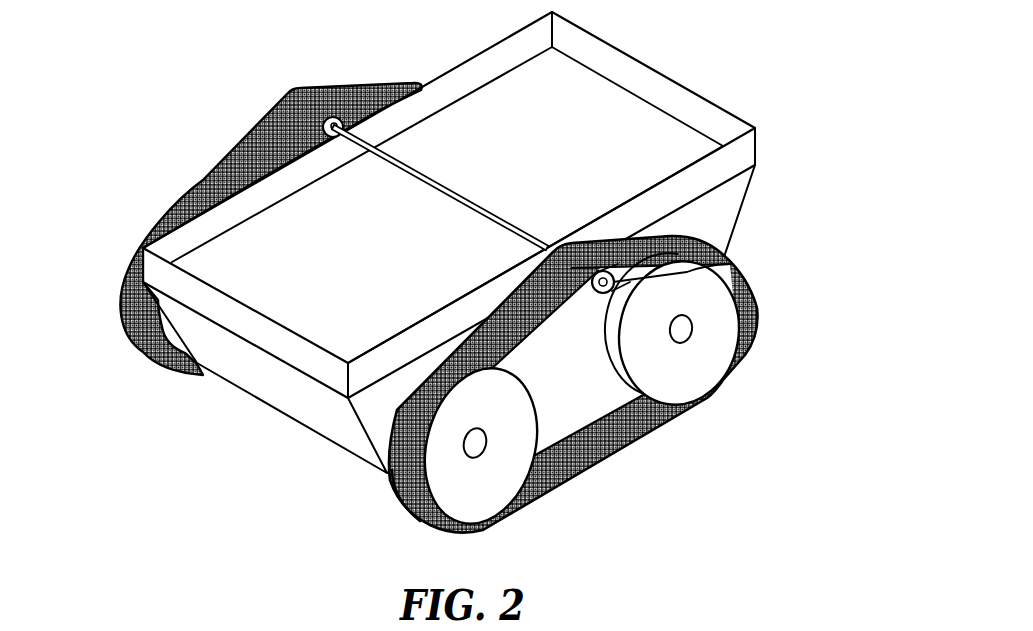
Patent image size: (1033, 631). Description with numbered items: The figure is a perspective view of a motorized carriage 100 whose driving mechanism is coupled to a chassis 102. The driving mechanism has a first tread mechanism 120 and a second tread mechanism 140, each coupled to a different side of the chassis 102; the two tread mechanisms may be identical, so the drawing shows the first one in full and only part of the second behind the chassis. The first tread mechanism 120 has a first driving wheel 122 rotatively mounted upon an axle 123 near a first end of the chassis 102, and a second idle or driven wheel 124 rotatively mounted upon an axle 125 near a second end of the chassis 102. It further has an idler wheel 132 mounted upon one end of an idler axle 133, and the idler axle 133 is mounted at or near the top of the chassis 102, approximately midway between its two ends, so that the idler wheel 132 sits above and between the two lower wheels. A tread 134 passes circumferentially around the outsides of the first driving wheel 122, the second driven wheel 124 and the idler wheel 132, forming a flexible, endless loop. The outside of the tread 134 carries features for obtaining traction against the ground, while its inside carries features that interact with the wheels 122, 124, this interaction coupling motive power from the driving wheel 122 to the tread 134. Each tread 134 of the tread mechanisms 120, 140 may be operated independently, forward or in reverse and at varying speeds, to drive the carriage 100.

The motorized carriage 100 is at (770, 76).
The chassis 102 is at (285, 422).
The first tread mechanism 120 is at (567, 401).
The first driving wheel 122 is at (543, 493).
The axle 123 is at (489, 447).
The second idle or driven wheel 124 is at (740, 363).
The axle 125 is at (688, 342).
The idler wheel 132 is at (730, 264).
The idler axle 133 is at (497, 212).
The tread 134 is at (408, 504).
The second tread mechanism 140 is at (100, 335).